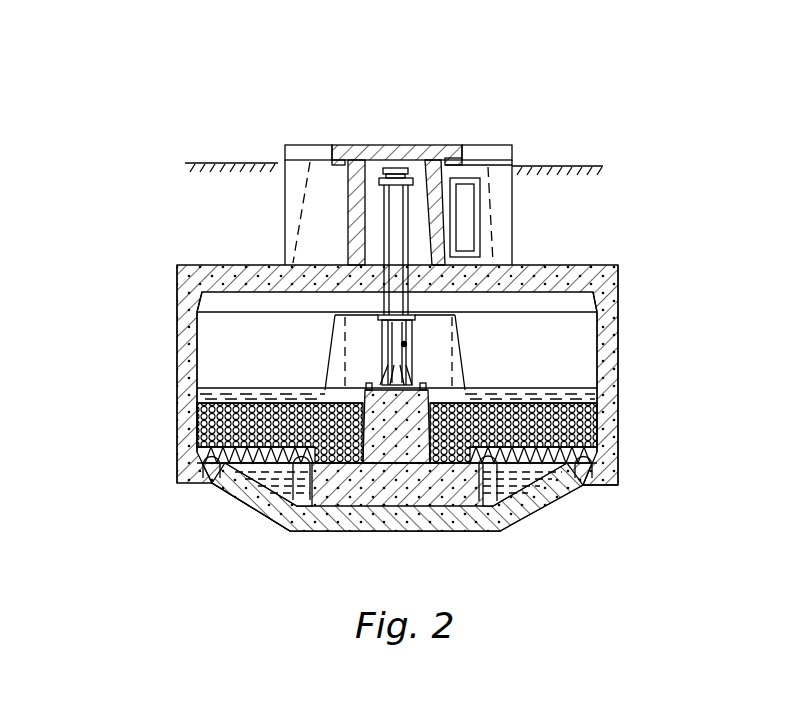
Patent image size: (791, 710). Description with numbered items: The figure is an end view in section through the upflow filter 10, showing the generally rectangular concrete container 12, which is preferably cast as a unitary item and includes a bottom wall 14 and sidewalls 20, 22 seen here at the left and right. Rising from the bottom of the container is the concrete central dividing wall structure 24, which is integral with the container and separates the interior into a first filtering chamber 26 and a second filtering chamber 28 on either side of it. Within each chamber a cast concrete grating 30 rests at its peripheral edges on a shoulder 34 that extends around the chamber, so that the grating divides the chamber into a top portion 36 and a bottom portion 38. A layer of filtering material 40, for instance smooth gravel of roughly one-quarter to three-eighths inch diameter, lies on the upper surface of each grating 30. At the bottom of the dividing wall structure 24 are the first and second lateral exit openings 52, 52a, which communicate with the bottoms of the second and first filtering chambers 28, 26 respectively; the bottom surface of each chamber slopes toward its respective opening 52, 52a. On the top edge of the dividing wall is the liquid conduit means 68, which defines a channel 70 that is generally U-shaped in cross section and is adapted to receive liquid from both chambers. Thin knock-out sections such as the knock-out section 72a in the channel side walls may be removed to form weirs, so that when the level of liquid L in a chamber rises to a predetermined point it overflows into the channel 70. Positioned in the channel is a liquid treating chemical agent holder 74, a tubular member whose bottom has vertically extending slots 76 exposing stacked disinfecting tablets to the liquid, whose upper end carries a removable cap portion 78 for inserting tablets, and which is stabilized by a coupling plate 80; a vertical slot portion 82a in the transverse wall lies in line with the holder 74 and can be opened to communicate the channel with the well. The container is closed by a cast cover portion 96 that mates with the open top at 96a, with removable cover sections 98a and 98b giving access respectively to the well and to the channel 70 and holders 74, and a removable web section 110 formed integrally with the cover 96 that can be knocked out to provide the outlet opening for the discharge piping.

The upflow filter 10 is at (608, 262).
The concrete container 12 is at (618, 473).
The bottom wall 14 is at (268, 517).
The sidewall 20 is at (606, 345).
The sidewall 22 is at (180, 432).
The central dividing wall structure 24 is at (330, 325).
The first filtering chamber 26 is at (198, 417).
The second filtering chamber 28 is at (533, 407).
The cast concrete grating 30 is at (195, 453).
The shoulder 34 is at (210, 460).
The top portion 36 is at (598, 413).
The bottom portion 38 is at (258, 468).
The layer of filtering material 40 is at (238, 393).
The first lateral exit opening 52 is at (468, 533).
The second lateral exit opening 52a is at (316, 530).
The liquid conduit means 68 is at (378, 378).
The channel 70 is at (390, 378).
The knock-out section 72a is at (367, 383).
The liquid treating chemical agent holder 74 is at (400, 238).
The slots 76 is at (410, 362).
The removable cap portion 78 is at (388, 168).
The coupling plate 80 is at (416, 182).
The vertical slot portion 82a is at (404, 345).
The cast cover portion 96 is at (258, 260).
The mating joint 96a is at (186, 308).
The removable cover section 98a is at (303, 143).
The removable cover section 98b is at (347, 146).
The removable web section 110 is at (466, 192).
The level of liquid L is at (227, 385).